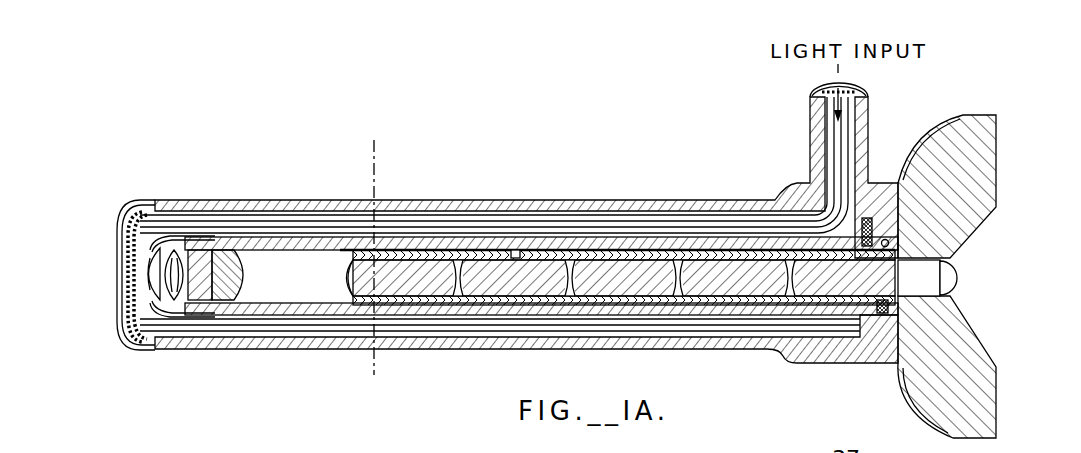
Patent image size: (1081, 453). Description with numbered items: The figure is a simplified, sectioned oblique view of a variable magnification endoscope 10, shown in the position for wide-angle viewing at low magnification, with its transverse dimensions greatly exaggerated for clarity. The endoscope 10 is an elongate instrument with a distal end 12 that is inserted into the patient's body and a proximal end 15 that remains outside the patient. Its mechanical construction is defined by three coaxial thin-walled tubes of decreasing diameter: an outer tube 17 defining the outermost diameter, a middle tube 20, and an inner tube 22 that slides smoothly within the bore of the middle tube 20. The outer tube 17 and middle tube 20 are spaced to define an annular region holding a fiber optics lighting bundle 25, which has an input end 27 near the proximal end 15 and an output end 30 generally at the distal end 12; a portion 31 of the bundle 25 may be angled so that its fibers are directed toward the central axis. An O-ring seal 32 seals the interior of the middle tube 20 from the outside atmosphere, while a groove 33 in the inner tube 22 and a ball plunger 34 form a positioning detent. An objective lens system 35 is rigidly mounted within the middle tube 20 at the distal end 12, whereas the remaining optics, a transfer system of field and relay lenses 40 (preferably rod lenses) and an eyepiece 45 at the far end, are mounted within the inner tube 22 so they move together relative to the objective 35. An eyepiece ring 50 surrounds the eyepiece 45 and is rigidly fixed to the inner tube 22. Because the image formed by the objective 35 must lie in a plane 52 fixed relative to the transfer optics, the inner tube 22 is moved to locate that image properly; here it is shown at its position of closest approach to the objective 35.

The endoscope 10 is at (496, 155).
The distal end 12 is at (112, 207).
The proximal end 15 is at (886, 166).
The outer tube 17 is at (166, 350).
The middle tube 20 is at (279, 240).
The inner tube 22 is at (420, 248).
The fiber optics lighting bundle 25 is at (175, 215).
The input end 27 is at (862, 93).
The output end 30 is at (138, 212).
The angled portion of bundle 31 is at (150, 246).
The O-ring seal 32 is at (890, 308).
The groove 33 is at (518, 250).
The ball plunger 34 is at (874, 240).
The objective lens system 35 is at (216, 230).
The field and relay lenses 40 is at (478, 282).
The eyepiece 45 is at (958, 275).
The eyepiece ring 50 is at (998, 153).
The plane 52 is at (376, 143).